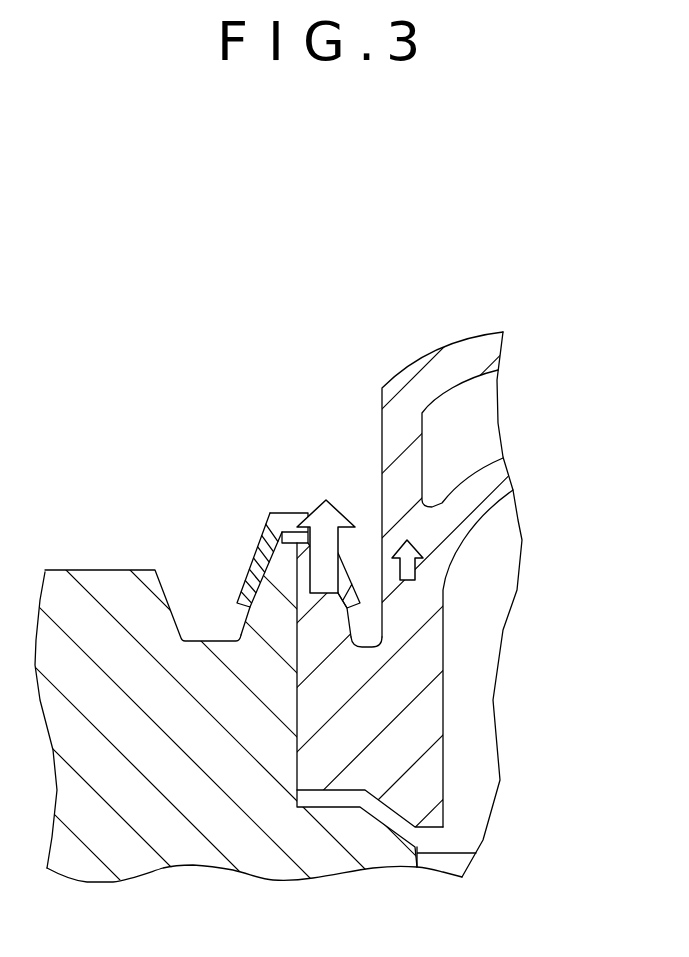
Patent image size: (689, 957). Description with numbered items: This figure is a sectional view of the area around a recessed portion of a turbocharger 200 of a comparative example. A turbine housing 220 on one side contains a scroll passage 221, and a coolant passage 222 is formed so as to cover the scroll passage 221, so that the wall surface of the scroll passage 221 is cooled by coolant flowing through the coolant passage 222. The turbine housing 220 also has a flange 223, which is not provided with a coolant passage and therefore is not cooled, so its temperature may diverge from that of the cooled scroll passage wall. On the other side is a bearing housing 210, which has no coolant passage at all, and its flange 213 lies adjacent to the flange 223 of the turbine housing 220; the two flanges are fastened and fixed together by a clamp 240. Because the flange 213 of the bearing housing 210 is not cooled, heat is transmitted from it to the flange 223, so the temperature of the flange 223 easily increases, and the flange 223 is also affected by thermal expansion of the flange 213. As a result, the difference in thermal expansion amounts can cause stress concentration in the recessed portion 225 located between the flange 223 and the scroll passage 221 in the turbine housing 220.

The turbocharger 200 is at (242, 355).
The bearing housing 210 is at (96, 570).
The flange 213 is at (270, 598).
The turbine housing 220 is at (443, 347).
The scroll passage 221 is at (503, 602).
The coolant passage 222 is at (483, 451).
The flange 223 is at (327, 610).
The recessed portion 225 is at (370, 662).
The clamp 240 is at (300, 528).